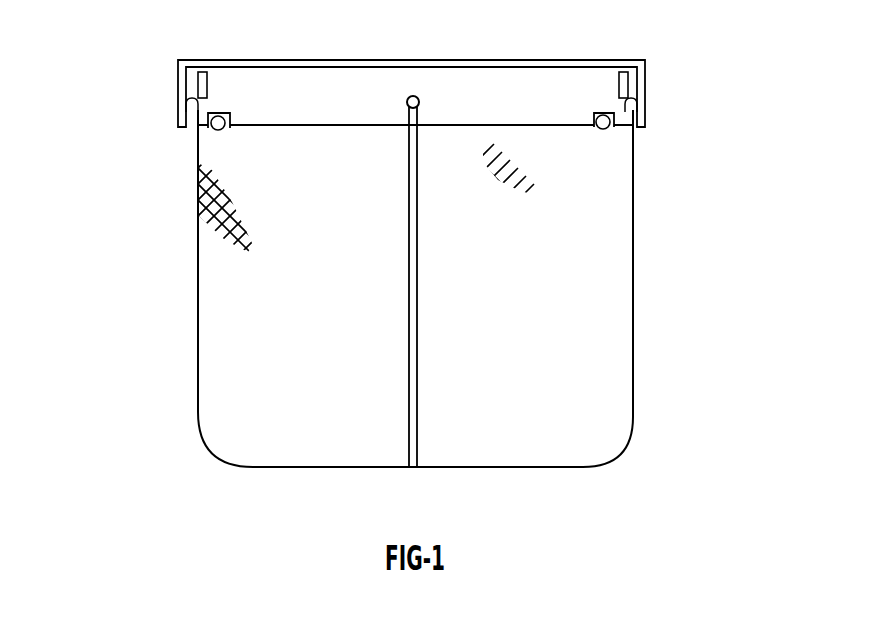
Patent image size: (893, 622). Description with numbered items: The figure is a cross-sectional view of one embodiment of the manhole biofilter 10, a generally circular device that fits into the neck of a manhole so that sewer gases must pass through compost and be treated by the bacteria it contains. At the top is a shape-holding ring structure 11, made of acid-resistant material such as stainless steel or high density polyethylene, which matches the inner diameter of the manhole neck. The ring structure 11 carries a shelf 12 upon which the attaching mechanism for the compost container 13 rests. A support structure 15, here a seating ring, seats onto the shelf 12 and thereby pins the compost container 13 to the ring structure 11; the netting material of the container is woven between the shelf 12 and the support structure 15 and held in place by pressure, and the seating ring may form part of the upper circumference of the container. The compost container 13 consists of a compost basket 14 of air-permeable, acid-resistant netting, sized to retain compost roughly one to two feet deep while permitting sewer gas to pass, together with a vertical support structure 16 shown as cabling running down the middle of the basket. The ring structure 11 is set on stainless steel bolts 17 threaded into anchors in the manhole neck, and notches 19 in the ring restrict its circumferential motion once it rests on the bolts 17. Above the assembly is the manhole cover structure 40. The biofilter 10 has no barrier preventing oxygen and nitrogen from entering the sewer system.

The manhole biofilter 10 is at (128, 72).
The shape-holding ring structure 11 is at (647, 90).
The shelf 12 is at (635, 103).
The compost container 13 is at (633, 273).
The compost basket 14 is at (617, 410).
The support structure 15 is at (621, 86).
The vertical support structure 16 is at (411, 332).
The stainless steel bolts 17 is at (213, 128).
The notches 19 is at (225, 113).
The manhole cover structure 40 is at (633, 58).